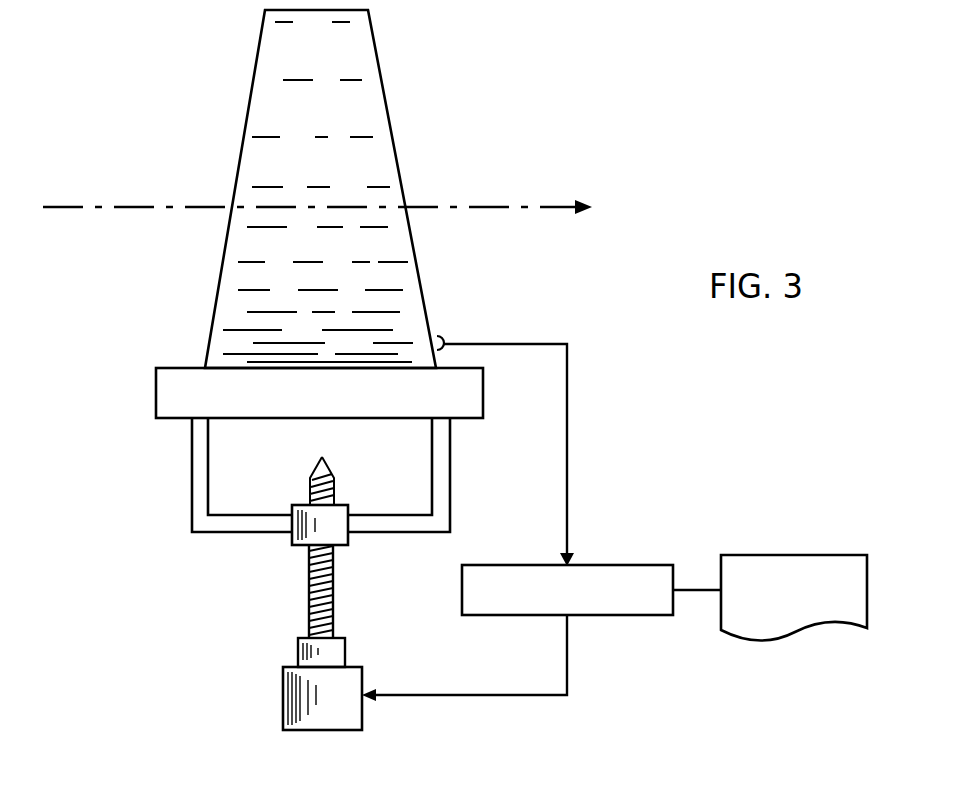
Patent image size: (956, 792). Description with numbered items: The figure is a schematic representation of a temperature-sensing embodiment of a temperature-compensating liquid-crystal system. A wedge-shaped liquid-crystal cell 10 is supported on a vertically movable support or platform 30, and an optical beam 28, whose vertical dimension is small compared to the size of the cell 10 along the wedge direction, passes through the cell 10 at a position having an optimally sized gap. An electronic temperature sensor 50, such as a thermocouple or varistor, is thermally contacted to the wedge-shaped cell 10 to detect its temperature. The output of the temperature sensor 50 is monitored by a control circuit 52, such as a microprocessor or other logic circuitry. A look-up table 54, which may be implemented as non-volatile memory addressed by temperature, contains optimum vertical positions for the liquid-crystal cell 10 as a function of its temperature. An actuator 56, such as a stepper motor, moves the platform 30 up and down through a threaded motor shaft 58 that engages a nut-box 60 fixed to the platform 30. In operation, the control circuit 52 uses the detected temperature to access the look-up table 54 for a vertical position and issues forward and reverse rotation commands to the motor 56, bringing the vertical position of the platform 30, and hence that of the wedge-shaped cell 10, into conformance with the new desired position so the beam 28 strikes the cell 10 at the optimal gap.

The wedge-shaped liquid-crystal cell 10 is at (272, 44).
The optical beam 28 is at (138, 205).
The vertically movable support 30 is at (165, 392).
The electronic temperature sensor 50 is at (443, 338).
The control circuit 52 is at (612, 611).
The look-up table 54 is at (778, 630).
The actuator 56 is at (292, 690).
The threaded motor shaft 58 is at (309, 618).
The nut-box 60 is at (300, 543).